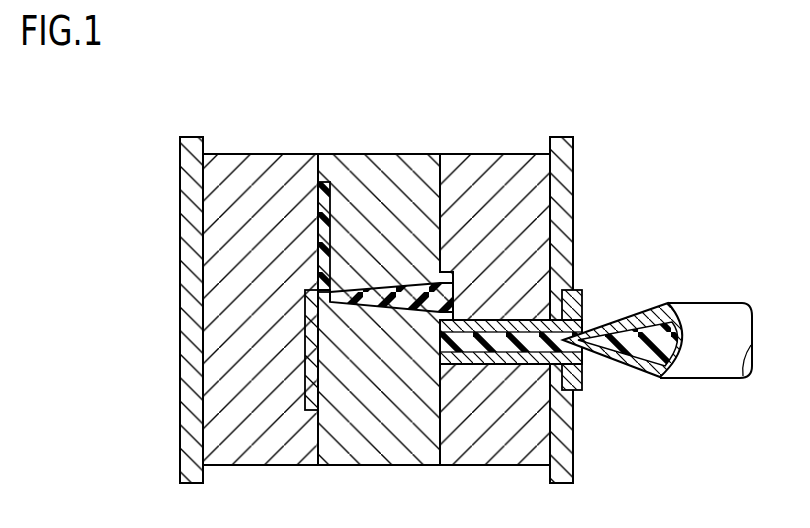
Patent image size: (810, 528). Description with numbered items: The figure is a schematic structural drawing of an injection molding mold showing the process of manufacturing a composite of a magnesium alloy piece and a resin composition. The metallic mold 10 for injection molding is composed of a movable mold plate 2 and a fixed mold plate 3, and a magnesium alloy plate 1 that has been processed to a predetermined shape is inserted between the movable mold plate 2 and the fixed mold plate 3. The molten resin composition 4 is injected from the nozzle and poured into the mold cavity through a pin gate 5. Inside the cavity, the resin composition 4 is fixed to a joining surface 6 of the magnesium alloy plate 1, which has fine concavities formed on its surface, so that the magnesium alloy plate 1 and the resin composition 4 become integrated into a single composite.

The magnesium alloy plate 1 is at (305, 377).
The movable mold plate 2 is at (271, 160).
The fixed mold plate 3 is at (393, 158).
The resin composition 4 is at (330, 220).
The pin gate 5 is at (326, 297).
The joining surface 6 is at (318, 295).
The metallic mold 10 is at (476, 153).